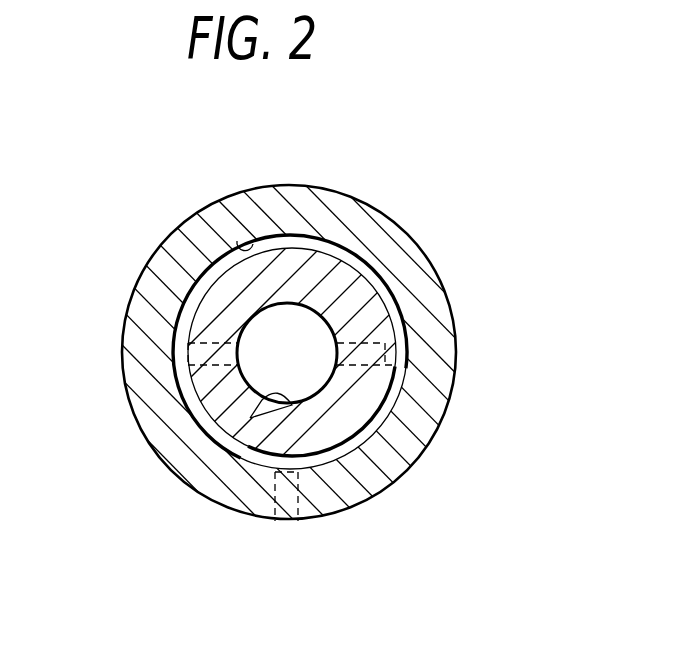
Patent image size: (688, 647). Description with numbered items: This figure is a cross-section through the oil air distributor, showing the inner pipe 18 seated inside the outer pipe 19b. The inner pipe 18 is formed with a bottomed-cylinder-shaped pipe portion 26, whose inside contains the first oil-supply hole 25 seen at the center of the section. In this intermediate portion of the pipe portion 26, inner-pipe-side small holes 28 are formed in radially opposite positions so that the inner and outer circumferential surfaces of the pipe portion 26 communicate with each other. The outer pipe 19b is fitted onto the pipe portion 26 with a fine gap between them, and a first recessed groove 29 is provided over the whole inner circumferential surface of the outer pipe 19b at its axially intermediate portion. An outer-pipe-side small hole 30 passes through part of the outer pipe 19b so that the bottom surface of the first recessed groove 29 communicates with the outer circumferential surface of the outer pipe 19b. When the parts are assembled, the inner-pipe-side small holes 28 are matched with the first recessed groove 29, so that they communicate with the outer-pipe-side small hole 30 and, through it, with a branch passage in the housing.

The outer pipe 19b is at (357, 227).
The inner pipe 18 is at (303, 349).
The pipe portion 26 is at (357, 298).
The first recessed groove 29 is at (238, 243).
The first oil-supply hole 25 is at (266, 404).
The inner-pipe-side small hole 28 is at (186, 366).
The outer-pipe-side small hole 30 is at (286, 526).